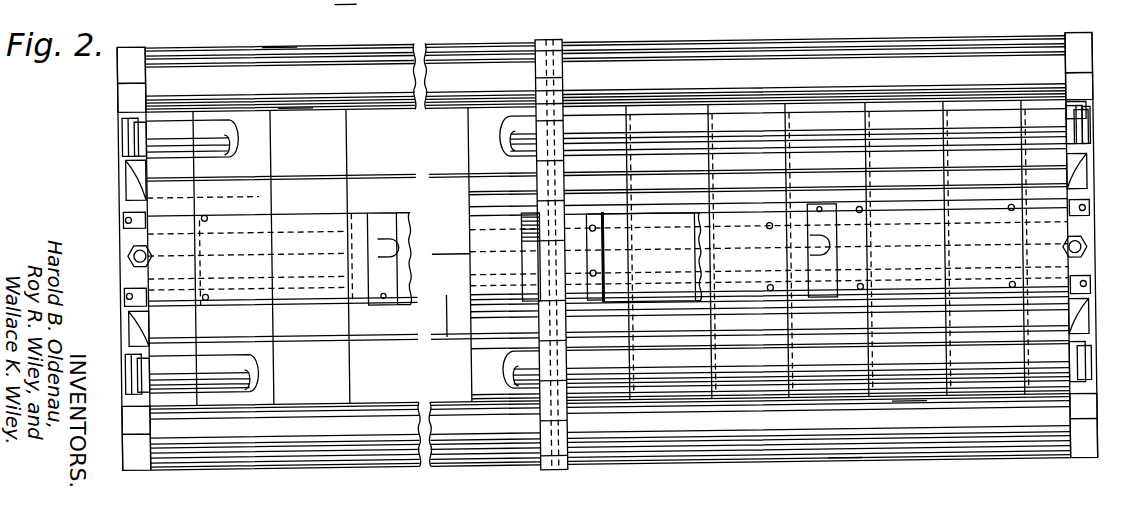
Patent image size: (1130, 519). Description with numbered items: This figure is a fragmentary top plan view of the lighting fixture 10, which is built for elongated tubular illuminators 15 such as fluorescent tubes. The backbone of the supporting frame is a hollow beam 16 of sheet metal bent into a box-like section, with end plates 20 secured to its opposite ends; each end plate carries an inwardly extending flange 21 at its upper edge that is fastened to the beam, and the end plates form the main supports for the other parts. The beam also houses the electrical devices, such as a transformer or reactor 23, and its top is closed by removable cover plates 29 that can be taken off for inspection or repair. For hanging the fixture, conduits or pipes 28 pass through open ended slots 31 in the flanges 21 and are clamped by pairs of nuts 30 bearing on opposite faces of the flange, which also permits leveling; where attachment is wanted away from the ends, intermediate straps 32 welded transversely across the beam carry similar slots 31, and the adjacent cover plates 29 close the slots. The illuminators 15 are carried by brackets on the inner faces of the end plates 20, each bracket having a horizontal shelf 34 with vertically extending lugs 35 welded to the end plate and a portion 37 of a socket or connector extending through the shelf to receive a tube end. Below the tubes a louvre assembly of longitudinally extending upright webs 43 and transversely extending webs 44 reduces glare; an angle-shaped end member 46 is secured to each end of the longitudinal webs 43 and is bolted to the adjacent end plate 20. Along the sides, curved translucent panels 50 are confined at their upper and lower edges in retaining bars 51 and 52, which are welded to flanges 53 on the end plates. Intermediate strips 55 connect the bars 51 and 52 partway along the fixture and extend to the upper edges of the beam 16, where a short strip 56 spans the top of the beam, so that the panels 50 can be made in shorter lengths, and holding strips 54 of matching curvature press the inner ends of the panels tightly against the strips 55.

The frame bracket 10 is at (620, 210).
The tubular illuminators 15 is at (205, 202).
The hollow beam 16 is at (380, 210).
The end plates 20 is at (122, 91).
The inwardly extending flange 21 is at (120, 227).
The transformer or reactor 23 is at (651, 257).
The conduits or pipes 28 is at (128, 250).
The removable cover plates 29 is at (427, 216).
The nuts 30 is at (128, 257).
The open ended slot 31 is at (840, 243).
The intermediate straps 32 is at (384, 293).
The horizontal web or shelf 34 is at (142, 191).
The vertically extending lugs 35 is at (1088, 156).
The portion of socket or connector 37 is at (148, 371).
The longitudinally extending upright webs 43 is at (378, 172).
The transversely extending webs 44 is at (473, 352).
The angle-shaped end member 46 is at (132, 172).
The translucent panels 50 is at (608, 252).
The upper retaining bar 51 is at (282, 41).
The lower retaining bar 52 is at (293, 106).
The flanges 53 is at (143, 47).
The holding strips 54 is at (143, 86).
The intermediate strips 55 is at (565, 110).
The short strip 56 is at (540, 266).